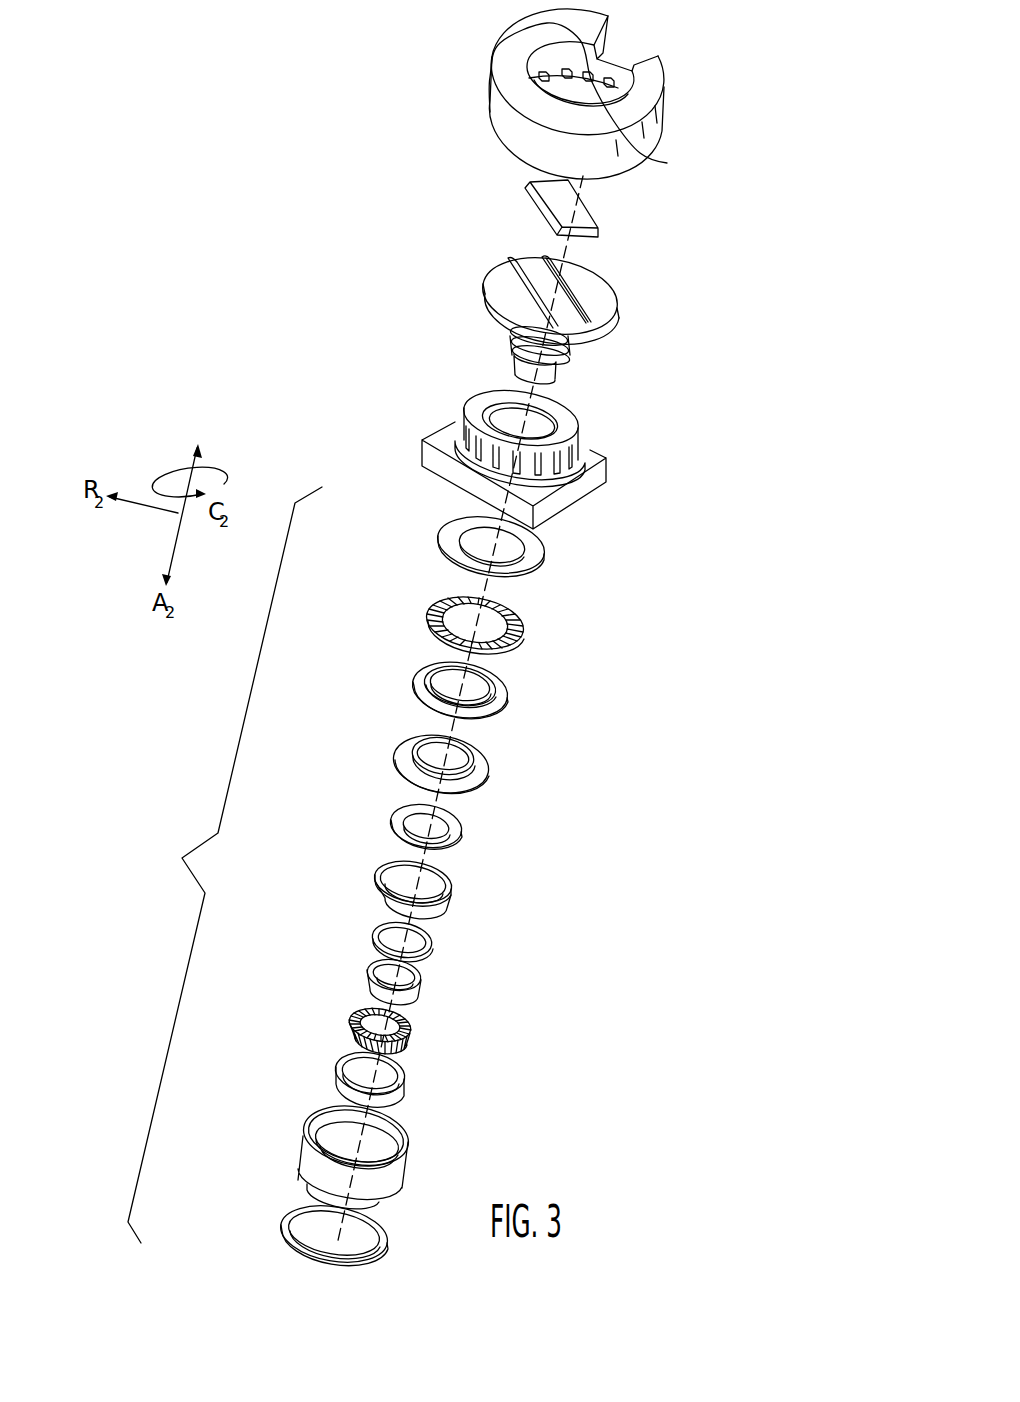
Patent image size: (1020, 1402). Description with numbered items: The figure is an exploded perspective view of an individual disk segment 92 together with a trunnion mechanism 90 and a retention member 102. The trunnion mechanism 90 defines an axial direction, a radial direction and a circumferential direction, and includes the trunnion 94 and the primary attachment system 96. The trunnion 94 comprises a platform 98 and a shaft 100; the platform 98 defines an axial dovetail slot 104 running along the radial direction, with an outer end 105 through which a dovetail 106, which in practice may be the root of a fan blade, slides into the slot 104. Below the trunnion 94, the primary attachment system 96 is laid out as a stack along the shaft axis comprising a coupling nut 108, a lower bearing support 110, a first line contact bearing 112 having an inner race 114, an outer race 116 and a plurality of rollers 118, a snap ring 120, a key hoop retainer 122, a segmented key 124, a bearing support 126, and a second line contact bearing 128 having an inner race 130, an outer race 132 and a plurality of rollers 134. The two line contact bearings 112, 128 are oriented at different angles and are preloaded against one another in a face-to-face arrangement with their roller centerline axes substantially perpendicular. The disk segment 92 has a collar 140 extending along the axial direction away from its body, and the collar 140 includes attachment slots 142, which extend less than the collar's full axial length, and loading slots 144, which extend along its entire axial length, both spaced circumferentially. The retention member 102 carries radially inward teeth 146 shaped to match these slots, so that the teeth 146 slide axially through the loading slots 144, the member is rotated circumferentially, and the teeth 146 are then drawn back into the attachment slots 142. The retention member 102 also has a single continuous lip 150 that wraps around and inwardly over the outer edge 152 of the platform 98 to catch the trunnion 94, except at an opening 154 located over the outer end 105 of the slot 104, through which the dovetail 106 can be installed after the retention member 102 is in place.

The trunnion mechanism 90 is at (351, 463).
The disk segment 92 is at (596, 462).
The trunnion 94 is at (603, 306).
The primary attachment system 96 is at (225, 865).
The platform 98 is at (493, 280).
The shaft 100 is at (513, 336).
The retention member 102 is at (497, 110).
The axial dovetail slot 104 is at (578, 293).
The outer end 105 is at (518, 251).
The dovetail 106 is at (597, 224).
The coupling nut 108 is at (290, 1213).
The lower bearing support 110 is at (304, 1136).
The first line contact bearing 112 is at (314, 1015).
The inner race 114 is at (367, 977).
The outer race 116 is at (335, 1077).
The rollers 118 is at (349, 1026).
The snap ring 120 is at (434, 944).
The key hoop retainer 122 is at (455, 884).
The segmented key 124 is at (460, 830).
The bearing support 126 is at (478, 772).
The second line contact bearing 128 is at (488, 655).
The inner race 130 is at (413, 683).
The outer race 132 is at (440, 543).
The rollers 134 is at (430, 612).
The collar 140 is at (566, 420).
The attachment slots 142 is at (522, 462).
The loading slots 144 is at (510, 456).
The teeth 146 is at (568, 70).
The lip 150 is at (667, 163).
The outer edge 152 is at (611, 291).
The opening 154 is at (627, 53).